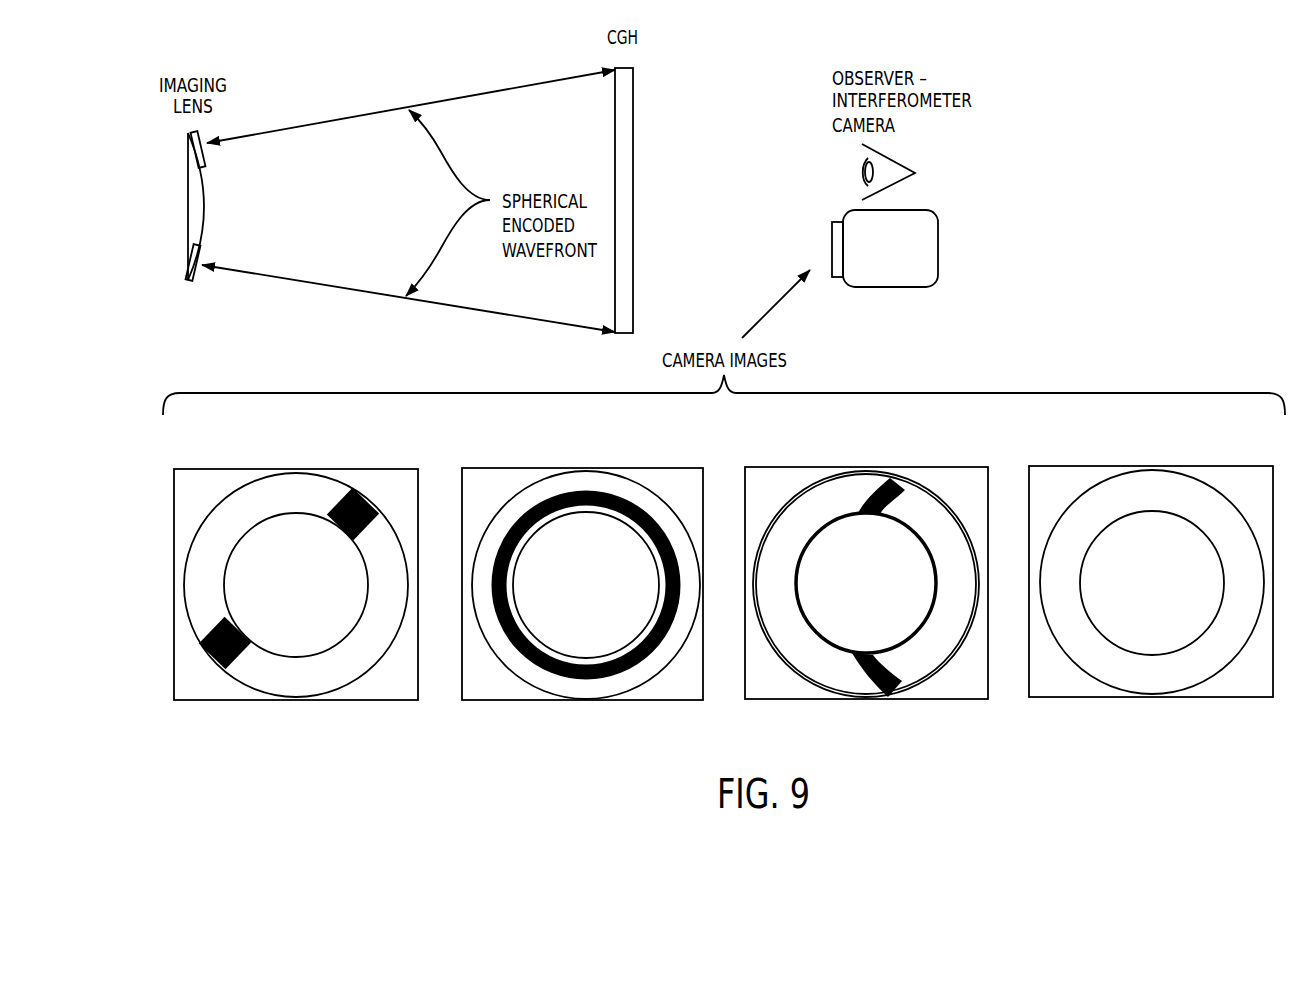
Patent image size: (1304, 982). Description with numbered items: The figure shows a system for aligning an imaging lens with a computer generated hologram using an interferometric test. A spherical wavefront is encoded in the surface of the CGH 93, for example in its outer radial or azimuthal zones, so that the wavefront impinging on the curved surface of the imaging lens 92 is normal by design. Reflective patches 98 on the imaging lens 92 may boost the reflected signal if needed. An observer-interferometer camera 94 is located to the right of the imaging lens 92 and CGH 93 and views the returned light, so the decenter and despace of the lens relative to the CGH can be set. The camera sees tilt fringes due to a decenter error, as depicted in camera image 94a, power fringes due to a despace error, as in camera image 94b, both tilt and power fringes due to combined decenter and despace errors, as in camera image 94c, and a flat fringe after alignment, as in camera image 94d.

The imaging lens 92 is at (197, 206).
The CGH 93 is at (631, 203).
The observer-interferometer camera 94 is at (938, 255).
The camera image 94a is at (377, 701).
The camera image 94b is at (650, 701).
The camera image 94c is at (948, 700).
The camera image 94d is at (1227, 698).
The reflective patches 98 is at (218, 168).